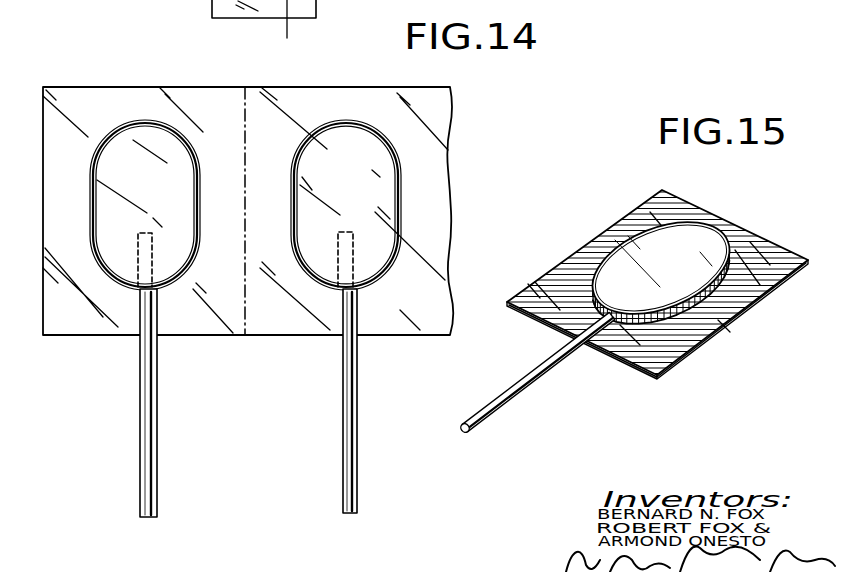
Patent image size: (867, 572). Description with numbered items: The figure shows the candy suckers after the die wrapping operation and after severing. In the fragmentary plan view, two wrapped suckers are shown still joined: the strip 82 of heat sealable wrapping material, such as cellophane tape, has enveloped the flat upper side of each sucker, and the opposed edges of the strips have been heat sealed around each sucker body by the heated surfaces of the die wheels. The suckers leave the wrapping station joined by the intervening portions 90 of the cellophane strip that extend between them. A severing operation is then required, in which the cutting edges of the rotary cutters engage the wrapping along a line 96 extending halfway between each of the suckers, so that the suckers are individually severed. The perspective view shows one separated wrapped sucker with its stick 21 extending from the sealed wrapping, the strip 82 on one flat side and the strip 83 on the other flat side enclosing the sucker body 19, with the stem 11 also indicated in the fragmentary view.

In FIG. 14, the stem 11 is at (300, 35).
In FIG. 14, the strip of heat sealable wrapping material 82 is at (96, 64).
In FIG. 15, the strip of heat sealable wrapping material 82 is at (612, 228).
In FIG. 14, the intervening portions of the cellophane strip 90 is at (242, 304).
In FIG. 14, the line 96 is at (248, 295).
In FIG. 14, the stem 21 is at (142, 425).
In FIG. 15, the stem 21 is at (508, 398).
In FIG. 15, the disc 19 is at (552, 341).
In FIG. 15, the strip of heat sealable wrapping material 83 is at (643, 372).